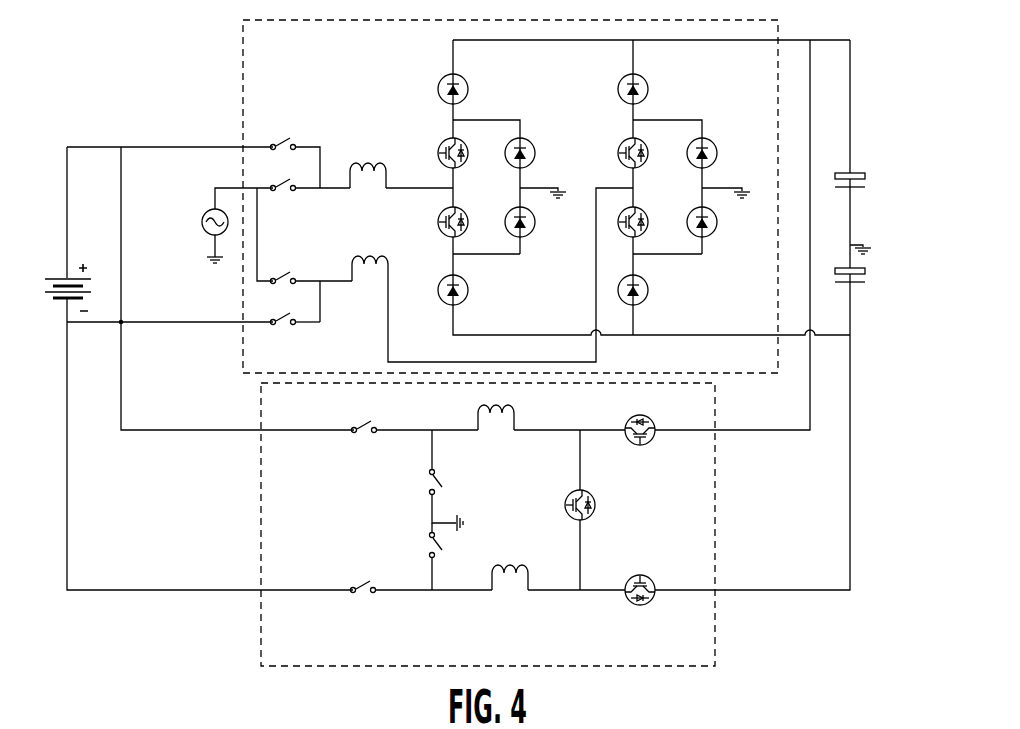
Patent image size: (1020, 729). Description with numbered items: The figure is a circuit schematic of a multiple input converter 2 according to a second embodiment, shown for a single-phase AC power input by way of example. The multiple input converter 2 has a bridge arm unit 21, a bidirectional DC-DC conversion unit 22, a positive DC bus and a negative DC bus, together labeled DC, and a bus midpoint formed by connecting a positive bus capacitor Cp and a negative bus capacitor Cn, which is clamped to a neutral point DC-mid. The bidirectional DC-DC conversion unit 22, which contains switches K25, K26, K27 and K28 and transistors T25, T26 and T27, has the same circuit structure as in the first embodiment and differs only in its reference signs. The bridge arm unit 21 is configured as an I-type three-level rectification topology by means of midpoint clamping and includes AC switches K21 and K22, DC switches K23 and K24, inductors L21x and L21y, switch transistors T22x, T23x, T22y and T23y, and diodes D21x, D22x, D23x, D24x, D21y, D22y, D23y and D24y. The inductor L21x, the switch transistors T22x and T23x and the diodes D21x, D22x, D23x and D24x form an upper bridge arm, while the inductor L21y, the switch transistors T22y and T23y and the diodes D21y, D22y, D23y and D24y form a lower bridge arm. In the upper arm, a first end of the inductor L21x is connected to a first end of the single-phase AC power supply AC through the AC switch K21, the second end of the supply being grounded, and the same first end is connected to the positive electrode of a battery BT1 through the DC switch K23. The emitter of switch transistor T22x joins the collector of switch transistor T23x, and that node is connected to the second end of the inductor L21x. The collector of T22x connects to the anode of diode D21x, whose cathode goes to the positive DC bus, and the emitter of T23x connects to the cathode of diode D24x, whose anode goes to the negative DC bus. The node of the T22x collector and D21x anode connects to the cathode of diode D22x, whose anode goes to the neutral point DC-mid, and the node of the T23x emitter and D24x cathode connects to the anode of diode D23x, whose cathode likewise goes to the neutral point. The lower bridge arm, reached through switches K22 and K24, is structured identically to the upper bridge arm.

The multiple input converter 2 is at (60, 0).
The bridge arm unit 21 is at (243, 53).
The bidirectional DC-DC conversion unit 22 is at (715, 635).
The battery BT1 is at (54, 287).
The single-phase AC power supply AC is at (224, 225).
The AC switch K21 is at (303, 230).
The AC switch K22 is at (309, 297).
The DC switch K23 is at (293, 163).
The DC switch K24 is at (293, 334).
The switch K25 is at (414, 442).
The switch K26 is at (418, 602).
The switch K27 is at (455, 480).
The switch K28 is at (455, 556).
The inductor L21x is at (401, 159).
The inductor L21y is at (492, 275).
The diode D21x is at (433, 89).
The diode D22x is at (540, 161).
The diode D23x is at (540, 234).
The diode D24x is at (644, 305).
The diode D21y is at (613, 89).
The diode D22y is at (718, 160).
The diode D23y is at (721, 234).
The diode D24y is at (656, 305).
The switch transistor T22x is at (479, 163).
The switch transistor T23x is at (479, 230).
The switch transistor T22y is at (660, 163).
The switch transistor T23y is at (660, 230).
The transistor T25 is at (641, 445).
The transistor T26 is at (597, 510).
The transistor T27 is at (641, 572).
The positive bus capacitor Cp is at (852, 204).
The negative bus capacitor Cn is at (853, 289).
The DC bus DC is at (871, 352).
The neutral point DC-mid is at (881, 229).